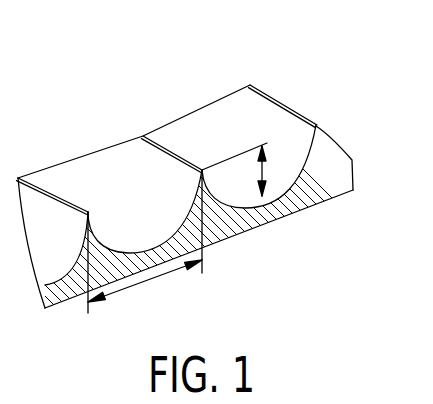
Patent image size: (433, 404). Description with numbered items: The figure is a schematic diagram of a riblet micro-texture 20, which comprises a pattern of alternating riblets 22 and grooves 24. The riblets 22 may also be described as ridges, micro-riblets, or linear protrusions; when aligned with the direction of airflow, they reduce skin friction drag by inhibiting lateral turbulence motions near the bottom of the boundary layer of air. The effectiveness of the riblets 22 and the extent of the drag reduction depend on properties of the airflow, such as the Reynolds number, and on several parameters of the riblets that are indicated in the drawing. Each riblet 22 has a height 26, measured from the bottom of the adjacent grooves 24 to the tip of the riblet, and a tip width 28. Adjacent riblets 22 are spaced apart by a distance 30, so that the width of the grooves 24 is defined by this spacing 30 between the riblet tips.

The riblet micro-texture 20 is at (175, 94).
The riblet 22 is at (43, 188).
The groove 24 is at (153, 224).
The height 26 is at (264, 172).
The tip width 28 is at (240, 127).
The distance 30 is at (128, 288).